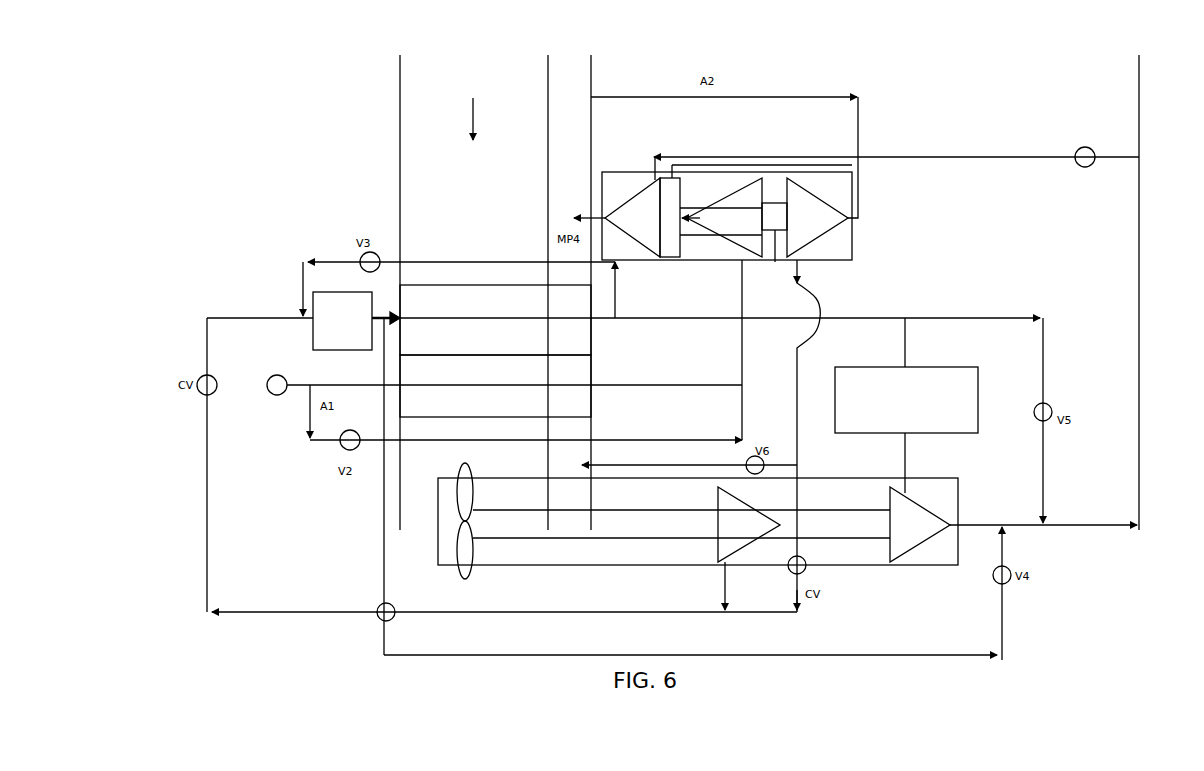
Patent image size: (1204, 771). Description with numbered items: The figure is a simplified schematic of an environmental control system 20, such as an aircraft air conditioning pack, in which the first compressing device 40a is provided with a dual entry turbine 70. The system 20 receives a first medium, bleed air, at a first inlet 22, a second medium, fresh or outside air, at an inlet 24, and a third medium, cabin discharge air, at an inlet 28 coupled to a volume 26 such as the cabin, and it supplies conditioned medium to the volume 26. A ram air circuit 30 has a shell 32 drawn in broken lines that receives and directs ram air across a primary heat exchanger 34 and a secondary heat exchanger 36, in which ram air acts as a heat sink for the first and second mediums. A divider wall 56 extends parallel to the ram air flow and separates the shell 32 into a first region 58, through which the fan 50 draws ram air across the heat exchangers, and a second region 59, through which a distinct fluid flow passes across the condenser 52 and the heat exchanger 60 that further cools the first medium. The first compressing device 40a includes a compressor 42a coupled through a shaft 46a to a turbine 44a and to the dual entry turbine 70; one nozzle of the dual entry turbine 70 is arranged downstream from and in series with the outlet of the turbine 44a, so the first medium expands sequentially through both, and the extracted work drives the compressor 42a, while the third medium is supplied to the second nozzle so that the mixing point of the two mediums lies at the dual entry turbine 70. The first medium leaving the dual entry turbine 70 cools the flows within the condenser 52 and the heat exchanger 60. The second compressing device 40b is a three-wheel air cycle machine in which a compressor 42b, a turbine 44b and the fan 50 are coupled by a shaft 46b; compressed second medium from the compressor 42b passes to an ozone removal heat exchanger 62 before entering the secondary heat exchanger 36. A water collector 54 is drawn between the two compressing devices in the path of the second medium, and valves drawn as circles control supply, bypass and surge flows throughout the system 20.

The environmental control system 20 is at (213, 114).
The first inlet 22 is at (262, 375).
The inlet 24 is at (592, 90).
The volume 26 is at (1186, 400).
The inlet 28 is at (1139, 152).
The RAM air circuit 30 is at (384, 86).
The shell 32 is at (400, 148).
The primary heat exchanger 34 is at (495, 386).
The secondary heat exchanger 36 is at (495, 320).
The first compressing device 40a is at (753, 207).
The second compressing device 40b is at (741, 539).
The compressor 42a is at (812, 195).
The compressor 42b is at (735, 560).
The turbine 44a is at (727, 240).
The turbine 44b is at (930, 528).
The shaft 46a is at (775, 262).
The shaft 46b is at (602, 540).
The fan 50 is at (470, 555).
The condenser 52 is at (568, 320).
The water collector 54 is at (906, 405).
The divider wall 56 is at (548, 170).
The first region 58 is at (490, 134).
The second region 59 is at (562, 185).
The heat exchanger 60 is at (568, 393).
The ozone removal heat exchanger 62 is at (342, 321).
The dual entry turbine 70 is at (650, 180).